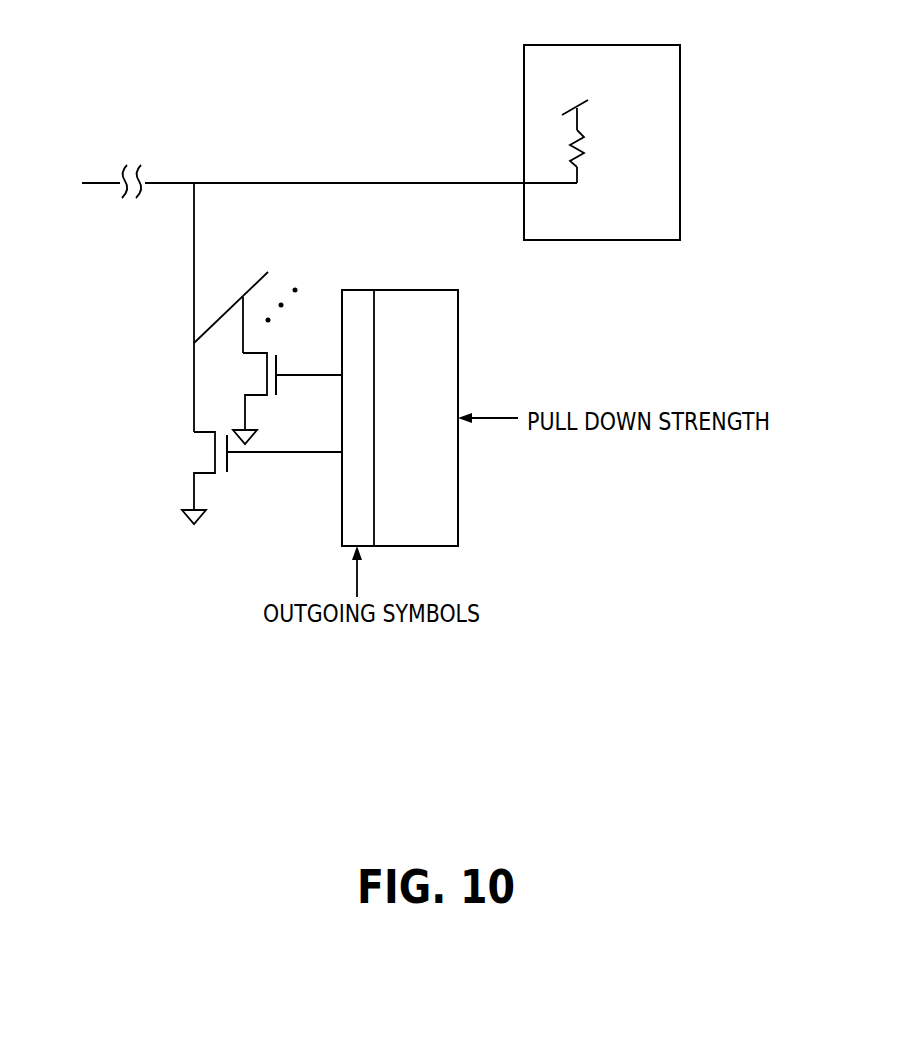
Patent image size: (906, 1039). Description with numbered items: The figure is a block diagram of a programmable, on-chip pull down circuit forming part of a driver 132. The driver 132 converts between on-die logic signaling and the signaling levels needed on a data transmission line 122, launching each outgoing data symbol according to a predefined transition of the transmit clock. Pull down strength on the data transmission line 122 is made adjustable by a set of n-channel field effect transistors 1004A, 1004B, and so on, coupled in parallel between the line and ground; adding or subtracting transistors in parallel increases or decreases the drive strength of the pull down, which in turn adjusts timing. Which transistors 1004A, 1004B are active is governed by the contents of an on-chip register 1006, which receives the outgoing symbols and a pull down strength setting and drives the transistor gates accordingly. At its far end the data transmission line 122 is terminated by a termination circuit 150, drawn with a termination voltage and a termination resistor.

The data transmission line 122 is at (418, 183).
The termination circuit 150 is at (680, 85).
The driver 132 is at (187, 391).
The n-channel field effect transistor 1004A is at (211, 475).
The n-channel field effect transistor 1004B is at (263, 397).
The on-chip register 1006 is at (430, 290).